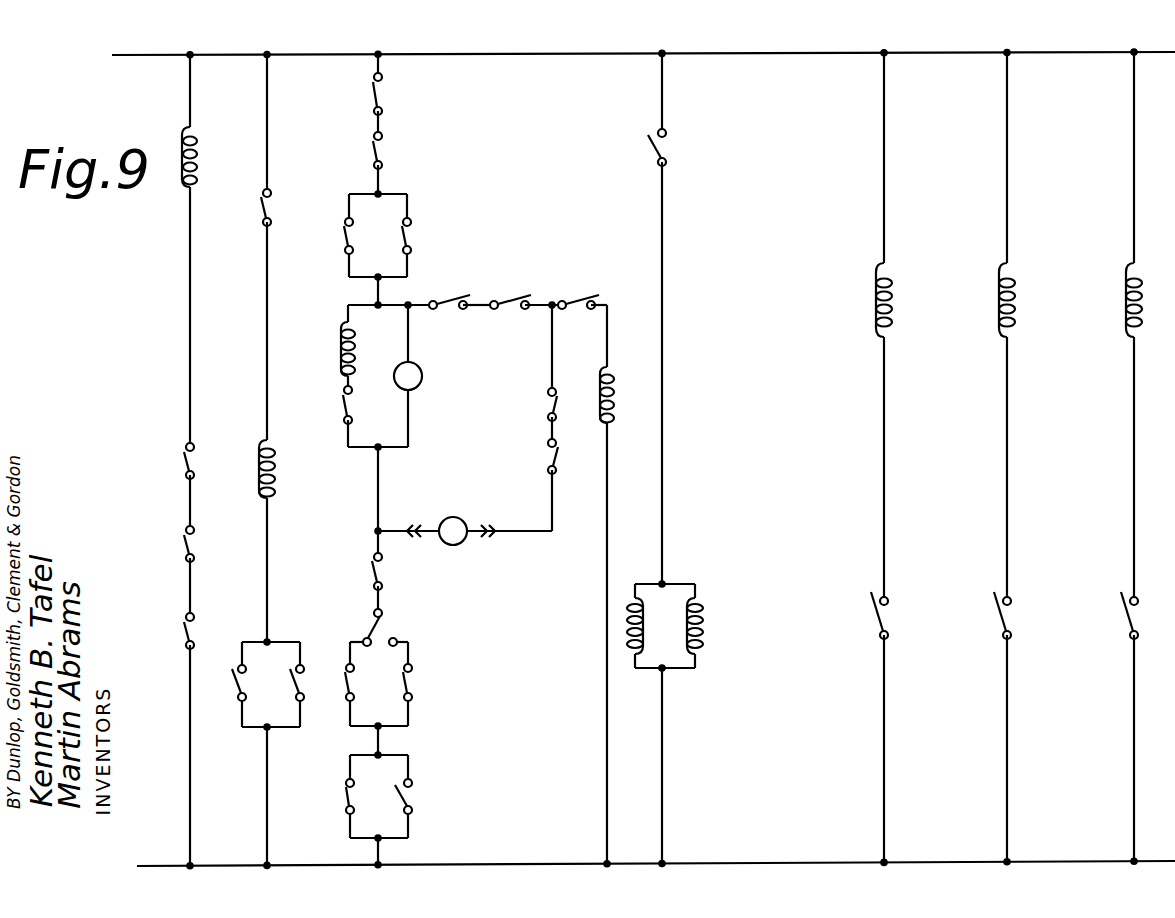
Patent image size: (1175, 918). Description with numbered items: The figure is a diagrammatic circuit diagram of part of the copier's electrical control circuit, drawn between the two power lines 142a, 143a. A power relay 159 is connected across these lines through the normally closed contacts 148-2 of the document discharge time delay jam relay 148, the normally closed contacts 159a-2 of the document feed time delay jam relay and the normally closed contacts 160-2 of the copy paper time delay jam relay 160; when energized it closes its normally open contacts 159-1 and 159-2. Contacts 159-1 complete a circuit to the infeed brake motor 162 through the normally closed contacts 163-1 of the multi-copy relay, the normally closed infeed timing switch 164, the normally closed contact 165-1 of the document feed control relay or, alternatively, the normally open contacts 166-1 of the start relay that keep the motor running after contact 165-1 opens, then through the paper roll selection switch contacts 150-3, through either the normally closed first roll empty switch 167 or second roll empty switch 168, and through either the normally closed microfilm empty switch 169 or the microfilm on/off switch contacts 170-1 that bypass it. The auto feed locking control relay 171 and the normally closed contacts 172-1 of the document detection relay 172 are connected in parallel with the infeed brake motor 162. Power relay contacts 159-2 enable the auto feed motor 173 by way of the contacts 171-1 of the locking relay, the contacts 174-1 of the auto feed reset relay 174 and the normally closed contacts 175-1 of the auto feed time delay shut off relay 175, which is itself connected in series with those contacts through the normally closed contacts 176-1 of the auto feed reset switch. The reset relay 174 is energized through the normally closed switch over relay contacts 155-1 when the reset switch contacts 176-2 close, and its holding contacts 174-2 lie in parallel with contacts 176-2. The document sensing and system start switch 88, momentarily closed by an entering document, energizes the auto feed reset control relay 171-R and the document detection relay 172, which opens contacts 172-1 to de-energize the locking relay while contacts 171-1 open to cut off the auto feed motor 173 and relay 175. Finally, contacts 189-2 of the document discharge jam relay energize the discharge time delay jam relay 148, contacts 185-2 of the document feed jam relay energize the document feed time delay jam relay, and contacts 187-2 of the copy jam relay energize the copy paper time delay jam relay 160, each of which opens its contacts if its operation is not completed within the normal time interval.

The power line 142a is at (163, 42).
The power line 143a is at (160, 866).
The power relay 159 is at (197, 162).
The normally closed contacts of switch over relay 155-1 is at (262, 207).
The normally closed contacts of multi-copy relay 163-1 is at (380, 93).
The infeed timing switch 164 is at (380, 150).
The normally closed contact of document feed control relay 165-1 is at (344, 232).
The normally open contacts of start relay 166-1 is at (409, 236).
The contacts of auto feed control locking relay 171-1 is at (454, 299).
The contacts of auto feed reset relay 174-1 is at (515, 299).
The normally closed contacts of auto feed reset switch 176-1 is at (584, 299).
The document sensing and system start switch 88 is at (655, 156).
The auto feed locking control relay 171 is at (340, 350).
The infeed brake motor 162 is at (421, 382).
The normally closed contacts of document detection relay 172-1 is at (345, 412).
The normally closed contacts of auto feed time delay shut off relay 175-1 is at (548, 400).
The normally open contacts of power relay 159-2 is at (548, 460).
The auto feed time delay shut off relay 175 is at (613, 388).
The auto feed reset relay 174 is at (274, 480).
The normally closed contacts of copy paper time delay jam relay 160-2 is at (186, 460).
The normally closed contacts of document feed time delay jam relay 159a-2 is at (191, 545).
The normally closed contacts of document discharge time delay jam relay 148-2 is at (187, 632).
The auto feed motor 173 is at (470, 554).
The normally open contacts of power relay 159-1 is at (372, 572).
The paper roll selection switch contacts 150-3 is at (378, 633).
The roll empty switch 167 is at (352, 684).
The roll empty switch 168 is at (410, 685).
The normally open holding contacts of auto feed reset relay 174-2 is at (237, 684).
The contacts of auto feed reset switch 176-2 is at (295, 684).
The microfilm empty switch 169 is at (347, 800).
The microfilm on/off switch contacts 170-1 is at (406, 797).
The document detection relay 172 is at (636, 605).
The auto feed reset control relay 171-R is at (701, 612).
The document discharge jam time delay relay 148 is at (876, 311).
The copy paper time delay jam relay 160 is at (1126, 312).
The contacts of document discharge jam relay 189-2 is at (876, 614).
The contacts of document feed jam relay 185-2 is at (998, 613).
The contacts of copy jam relay 187-2 is at (1124, 620).